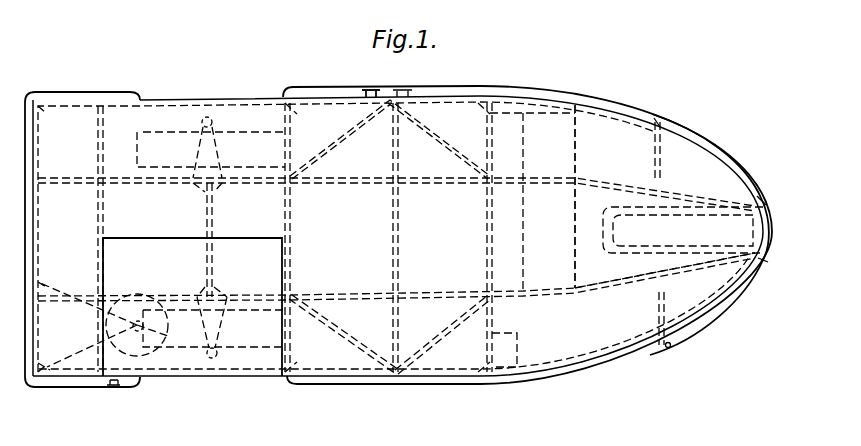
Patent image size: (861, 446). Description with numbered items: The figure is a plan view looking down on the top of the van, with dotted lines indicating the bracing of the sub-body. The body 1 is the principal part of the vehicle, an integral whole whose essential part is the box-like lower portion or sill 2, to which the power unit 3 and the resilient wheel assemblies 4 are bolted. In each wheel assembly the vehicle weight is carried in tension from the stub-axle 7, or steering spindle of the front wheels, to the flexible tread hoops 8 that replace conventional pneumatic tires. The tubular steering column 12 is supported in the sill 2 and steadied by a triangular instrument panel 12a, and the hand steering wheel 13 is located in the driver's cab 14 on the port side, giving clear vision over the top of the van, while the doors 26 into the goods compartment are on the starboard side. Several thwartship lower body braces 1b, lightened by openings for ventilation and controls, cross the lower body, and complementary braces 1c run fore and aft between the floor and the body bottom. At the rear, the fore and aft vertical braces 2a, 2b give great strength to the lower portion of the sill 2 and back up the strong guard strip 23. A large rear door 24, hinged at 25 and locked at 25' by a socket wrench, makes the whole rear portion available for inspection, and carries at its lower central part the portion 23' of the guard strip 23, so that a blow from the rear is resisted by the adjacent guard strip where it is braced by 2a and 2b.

The body 1 is at (474, 90).
The lower body braces 1b is at (98, 217).
The complementary braces 1c is at (133, 186).
The box-like lower portion or sill 2 is at (358, 364).
The vertical brace 2a is at (673, 185).
The vertical brace 2b is at (575, 290).
The power unit 3 is at (575, 147).
The resilient wheel assemblies 4 is at (215, 118).
The stub-axle 7 is at (58, 373).
The flexible tread hoops 8 is at (175, 136).
The steering column 12 is at (160, 330).
The triangular instrument panel 12a is at (72, 374).
The hand steering wheel 13 is at (142, 292).
The driver's cab 14 is at (147, 252).
The guard strip 23 is at (395, 228).
The bumper strip portion 23' is at (773, 237).
The rear door 24 is at (722, 291).
The hinge 25 is at (676, 111).
The lock 25' is at (678, 359).
The doors 26 is at (340, 93).